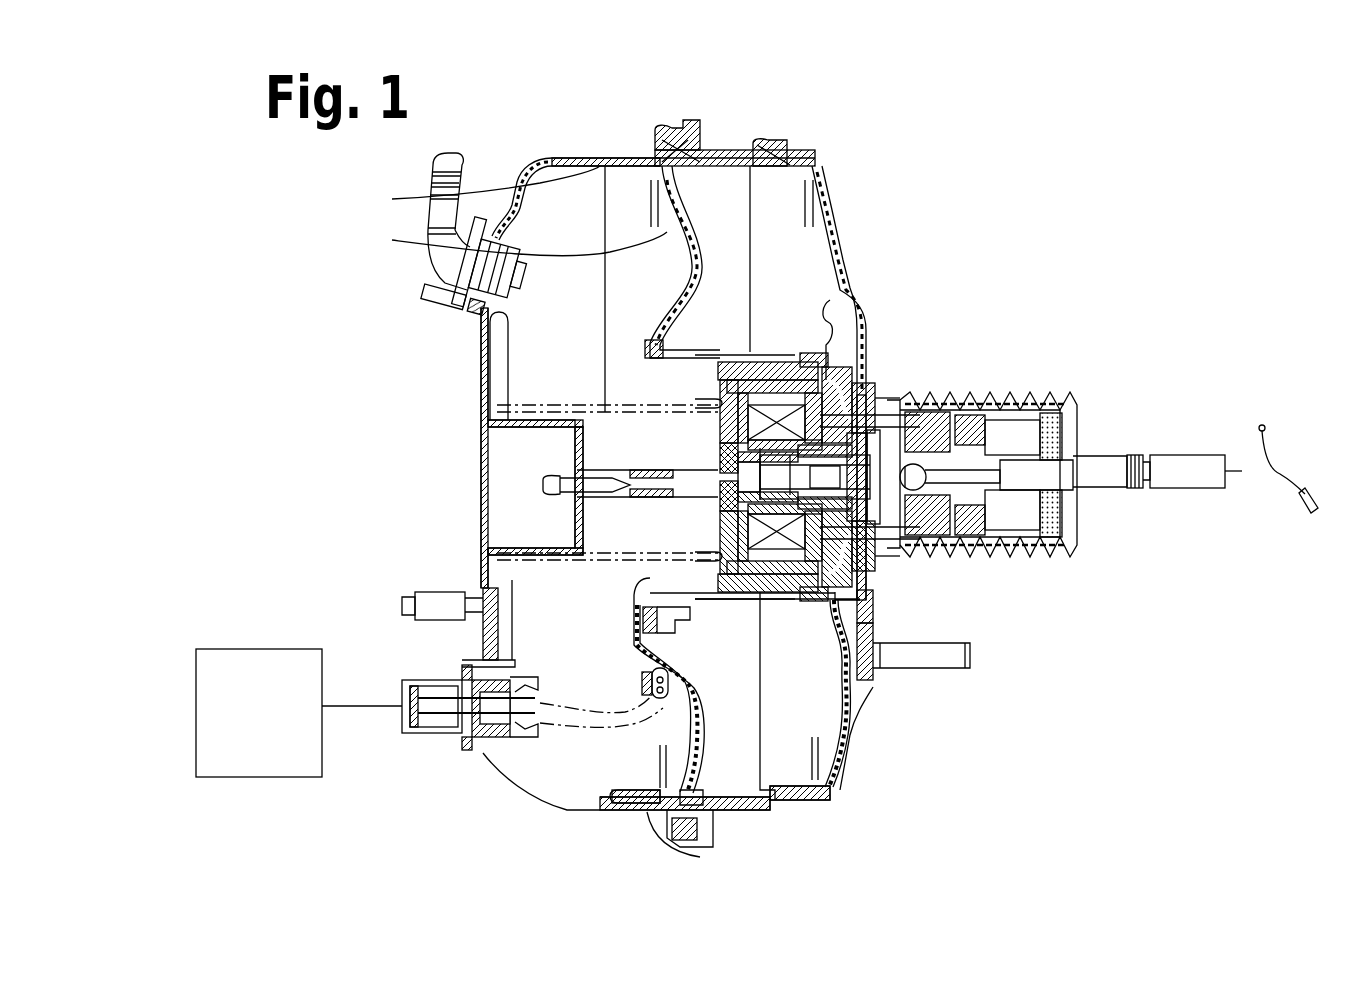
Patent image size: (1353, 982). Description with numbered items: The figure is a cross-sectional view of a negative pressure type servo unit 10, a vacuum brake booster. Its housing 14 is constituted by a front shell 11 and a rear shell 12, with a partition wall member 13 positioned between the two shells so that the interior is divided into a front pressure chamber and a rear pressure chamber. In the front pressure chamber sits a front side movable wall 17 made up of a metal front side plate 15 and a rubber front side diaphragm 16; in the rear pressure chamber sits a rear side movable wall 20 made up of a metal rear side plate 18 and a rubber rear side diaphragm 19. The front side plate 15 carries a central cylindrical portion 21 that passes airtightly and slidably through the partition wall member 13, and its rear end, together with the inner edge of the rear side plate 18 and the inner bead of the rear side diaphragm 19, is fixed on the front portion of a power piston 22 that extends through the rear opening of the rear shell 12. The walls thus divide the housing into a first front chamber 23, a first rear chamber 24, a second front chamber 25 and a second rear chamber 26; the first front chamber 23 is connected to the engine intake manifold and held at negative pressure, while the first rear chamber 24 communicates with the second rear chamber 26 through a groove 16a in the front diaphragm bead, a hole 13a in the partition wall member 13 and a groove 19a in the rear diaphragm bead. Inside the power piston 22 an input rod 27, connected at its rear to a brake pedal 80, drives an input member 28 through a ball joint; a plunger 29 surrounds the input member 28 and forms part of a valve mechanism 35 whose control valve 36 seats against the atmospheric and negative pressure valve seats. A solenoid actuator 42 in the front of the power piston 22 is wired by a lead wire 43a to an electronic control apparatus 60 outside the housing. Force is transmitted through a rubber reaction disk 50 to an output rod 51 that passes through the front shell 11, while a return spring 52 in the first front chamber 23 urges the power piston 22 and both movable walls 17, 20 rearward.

The negative pressure type servo unit 10 is at (1040, 266).
The front shell 11 is at (700, 857).
The rear shell 12 is at (847, 727).
The partition wall member 13 is at (820, 778).
The hole 13a is at (720, 150).
The housing 14 is at (734, 717).
The front side plate 15 is at (446, 266).
The front side diaphragm 16 is at (413, 221).
The groove 16a is at (655, 150).
The front side movable wall 17 is at (420, 238).
The rear side plate 18 is at (815, 235).
The rear side diaphragm 19 is at (805, 162).
The groove 19a is at (760, 150).
The rear side movable wall 20 is at (889, 263).
The cylindrical portion 21 is at (728, 352).
The power piston 22 is at (968, 398).
The first front chamber 23 is at (570, 327).
The first rear chamber 24 is at (640, 348).
The second front chamber 25 is at (773, 300).
The second rear chamber 26 is at (858, 315).
The input rod 27 is at (1108, 462).
The input member 28 is at (912, 562).
The plunger 29 is at (903, 398).
The valve mechanism 35 is at (935, 545).
The control valve 36 is at (1000, 397).
The actuator 42 is at (793, 592).
The lead wire 43a is at (727, 580).
The reaction disk 50 is at (718, 448).
The output rod 51 is at (690, 488).
The return spring 52 is at (497, 557).
The electronic control apparatus 60 is at (322, 752).
The brake pedal 80 is at (1278, 475).